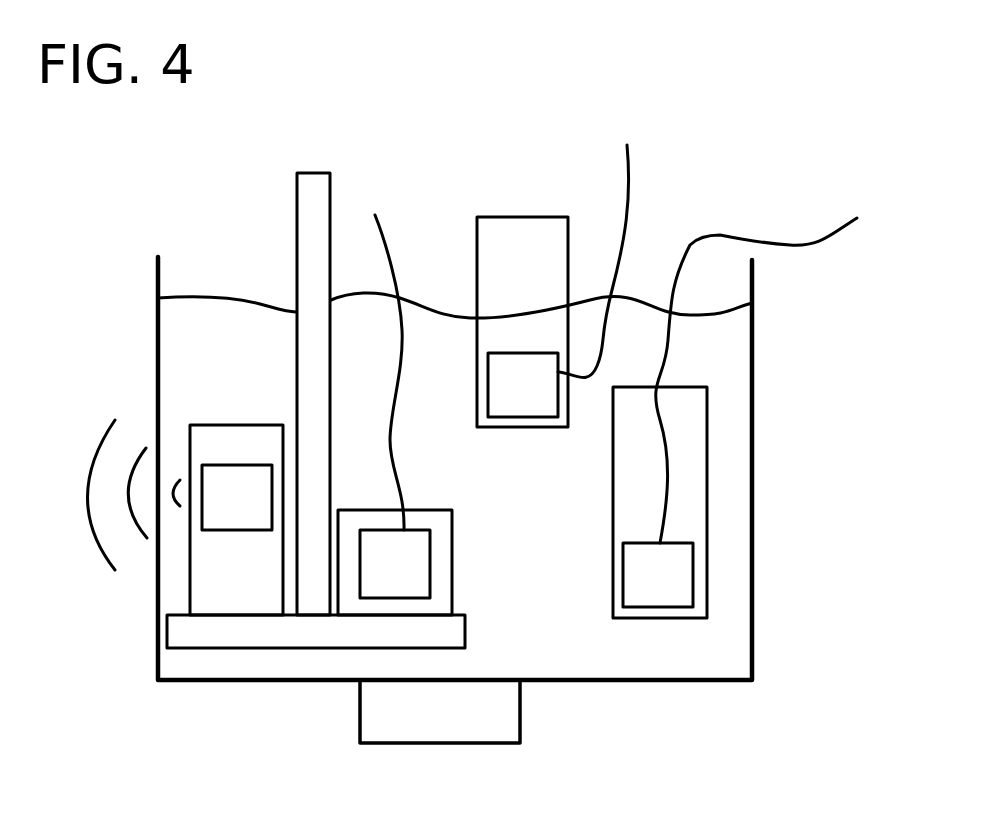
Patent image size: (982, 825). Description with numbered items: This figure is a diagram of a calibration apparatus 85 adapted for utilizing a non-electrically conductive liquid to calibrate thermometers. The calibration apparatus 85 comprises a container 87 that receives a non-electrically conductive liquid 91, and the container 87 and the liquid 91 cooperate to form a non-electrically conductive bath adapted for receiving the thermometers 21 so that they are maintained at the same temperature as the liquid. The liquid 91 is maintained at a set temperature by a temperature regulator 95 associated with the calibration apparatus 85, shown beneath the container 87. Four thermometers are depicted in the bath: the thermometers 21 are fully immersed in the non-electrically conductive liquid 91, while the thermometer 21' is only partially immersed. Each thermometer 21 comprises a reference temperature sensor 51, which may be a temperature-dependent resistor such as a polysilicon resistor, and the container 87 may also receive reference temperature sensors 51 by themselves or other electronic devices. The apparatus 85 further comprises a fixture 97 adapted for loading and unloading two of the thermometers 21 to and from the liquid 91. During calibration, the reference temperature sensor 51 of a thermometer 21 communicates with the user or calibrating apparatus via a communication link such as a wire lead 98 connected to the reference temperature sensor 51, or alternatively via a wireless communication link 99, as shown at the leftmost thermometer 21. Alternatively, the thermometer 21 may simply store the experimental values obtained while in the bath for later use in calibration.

The calibration apparatus 85 is at (692, 173).
The container 87 is at (755, 456).
The non-electrically conductive liquid 91 is at (535, 514).
The temperature regulator 95 is at (459, 726).
The fixture 97 is at (320, 173).
The wire lead 98 is at (394, 262).
The wireless communication link 99 is at (85, 458).
The thermometer 21 is at (470, 542).
The thermometer 21' is at (492, 283).
The reference temperature sensor 51 is at (257, 511).